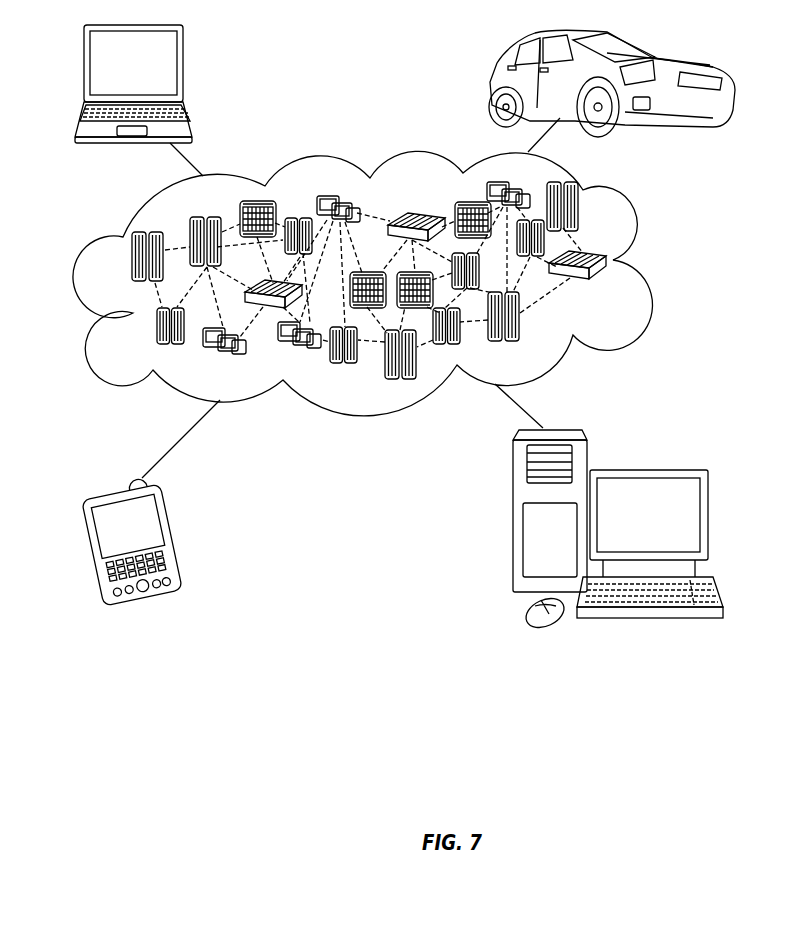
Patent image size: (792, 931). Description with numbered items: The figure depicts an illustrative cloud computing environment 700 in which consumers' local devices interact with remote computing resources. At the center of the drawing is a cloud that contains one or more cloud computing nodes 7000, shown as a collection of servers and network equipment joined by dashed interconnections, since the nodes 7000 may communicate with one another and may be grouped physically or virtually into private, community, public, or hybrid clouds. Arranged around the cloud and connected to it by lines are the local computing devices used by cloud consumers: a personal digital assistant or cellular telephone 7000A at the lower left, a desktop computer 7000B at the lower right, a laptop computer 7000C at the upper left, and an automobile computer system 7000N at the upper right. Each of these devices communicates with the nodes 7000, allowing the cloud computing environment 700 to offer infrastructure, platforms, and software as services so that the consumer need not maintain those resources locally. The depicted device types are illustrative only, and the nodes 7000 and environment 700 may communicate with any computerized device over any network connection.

The laptop computer 7000C is at (186, 72).
The automobile computer system 7000N is at (490, 80).
The cloud computing nodes 7000 is at (648, 266).
The cloud computing environment 700 is at (390, 283).
The personal digital assistant (PDA) or cellular telephone 7000A is at (178, 537).
The desktop computer 7000B is at (647, 470).